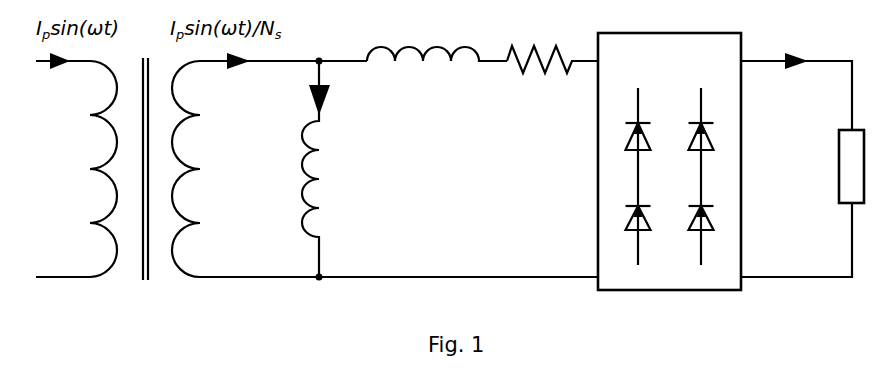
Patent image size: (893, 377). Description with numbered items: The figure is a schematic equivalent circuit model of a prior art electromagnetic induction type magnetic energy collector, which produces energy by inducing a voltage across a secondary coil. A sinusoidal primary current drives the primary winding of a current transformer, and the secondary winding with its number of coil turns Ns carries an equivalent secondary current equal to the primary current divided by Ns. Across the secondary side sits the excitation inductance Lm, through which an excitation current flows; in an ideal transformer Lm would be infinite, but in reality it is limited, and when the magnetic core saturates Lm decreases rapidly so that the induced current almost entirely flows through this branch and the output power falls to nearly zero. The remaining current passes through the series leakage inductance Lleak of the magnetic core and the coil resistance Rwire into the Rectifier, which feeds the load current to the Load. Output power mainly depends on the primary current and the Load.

The number of coil turns Ns is at (203, 169).
The excitation inductance Lm is at (341, 169).
The leakage inductance Lleak is at (437, 38).
The coil resistance Rwire is at (552, 44).
The rectifier Rectifier is at (669, 161).
The load Load is at (802, 148).